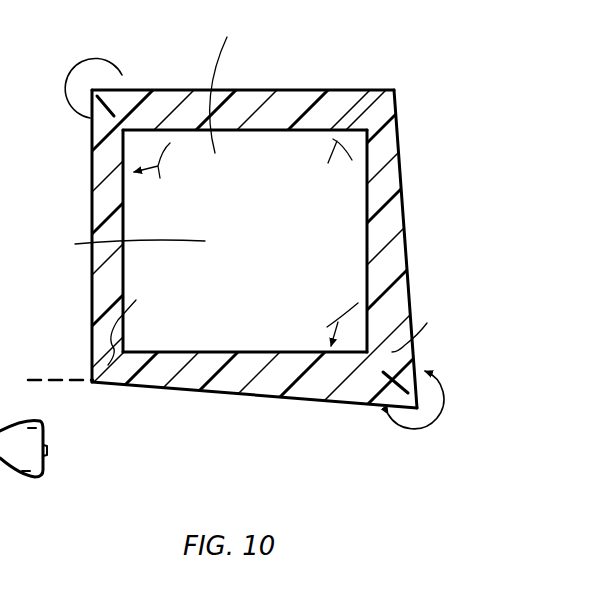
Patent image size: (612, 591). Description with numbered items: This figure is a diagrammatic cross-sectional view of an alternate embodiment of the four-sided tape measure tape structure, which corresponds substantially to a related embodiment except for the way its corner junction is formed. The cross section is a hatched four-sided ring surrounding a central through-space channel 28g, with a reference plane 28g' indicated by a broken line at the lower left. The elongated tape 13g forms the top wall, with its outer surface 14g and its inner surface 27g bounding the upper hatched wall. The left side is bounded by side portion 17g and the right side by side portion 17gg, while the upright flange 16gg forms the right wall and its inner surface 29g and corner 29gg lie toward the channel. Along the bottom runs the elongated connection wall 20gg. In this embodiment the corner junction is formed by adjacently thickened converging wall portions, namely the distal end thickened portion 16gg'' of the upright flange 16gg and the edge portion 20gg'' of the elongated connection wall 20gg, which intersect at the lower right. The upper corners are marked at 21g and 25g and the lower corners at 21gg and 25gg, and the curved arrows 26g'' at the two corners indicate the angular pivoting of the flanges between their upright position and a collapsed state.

The elongated tape 13g is at (240, 100).
The outer top edge 14g is at (328, 90).
The left side member 17g is at (92, 202).
The right side member 17gg is at (421, 205).
The elongated connection wall 20gg is at (245, 346).
The edge portion of elongated connection wall 20gg'' is at (254, 414).
The upright flange 16gg is at (338, 241).
The distal end thickened portion of upright flange 16gg'' is at (436, 311).
The upper right corner 21g is at (380, 113).
The lower left corner 21gg is at (152, 323).
The upper left corner joint 25g is at (128, 88).
The lower right corner joint 25gg is at (402, 355).
The rotation direction 26g'' is at (254, 251).
The inner top edge 27g is at (317, 167).
The window opening 28g is at (141, 132).
The reference plane 28g' is at (60, 325).
The inner left edge 29g is at (167, 176).
The inner lower right edge 29gg is at (310, 324).